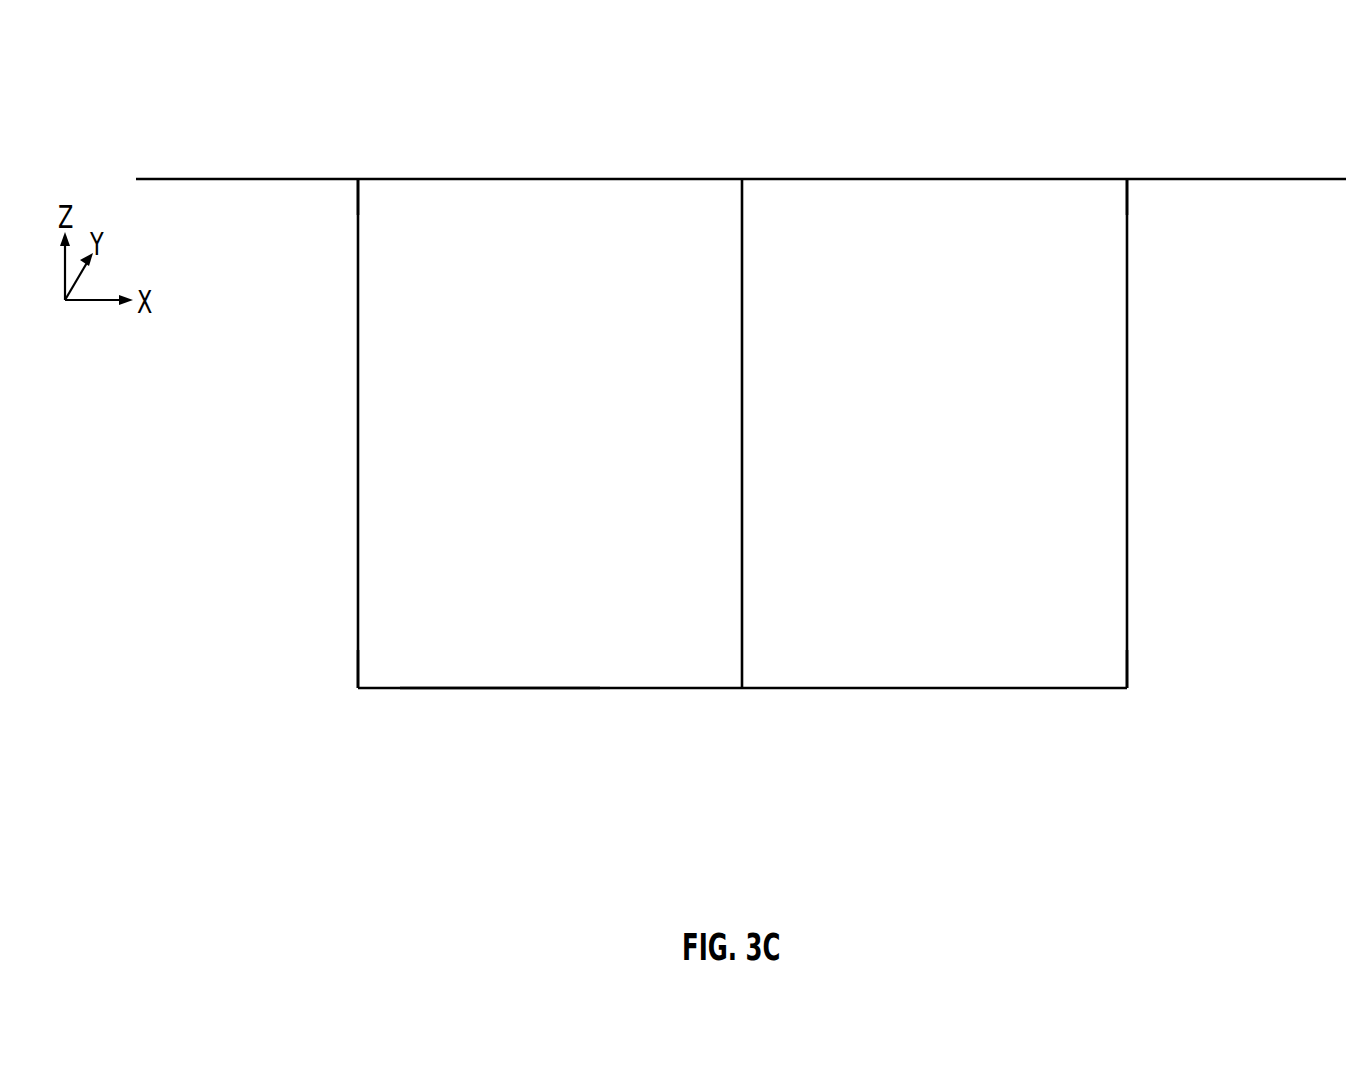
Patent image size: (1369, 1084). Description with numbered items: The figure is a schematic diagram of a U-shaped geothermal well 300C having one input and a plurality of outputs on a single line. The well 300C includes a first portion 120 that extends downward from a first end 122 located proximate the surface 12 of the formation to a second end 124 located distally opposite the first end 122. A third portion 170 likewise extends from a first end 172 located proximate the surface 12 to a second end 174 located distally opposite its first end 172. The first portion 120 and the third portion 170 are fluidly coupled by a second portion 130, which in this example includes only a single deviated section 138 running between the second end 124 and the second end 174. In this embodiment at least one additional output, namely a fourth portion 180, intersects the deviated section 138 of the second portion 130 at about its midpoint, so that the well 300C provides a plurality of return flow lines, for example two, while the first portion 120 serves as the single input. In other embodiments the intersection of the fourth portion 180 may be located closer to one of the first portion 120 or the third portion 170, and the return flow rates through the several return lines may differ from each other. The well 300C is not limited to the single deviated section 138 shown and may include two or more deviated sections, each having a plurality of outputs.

The U-shaped geothermal well 300C is at (542, 74).
The surface 12 is at (900, 179).
The first portion 120 is at (358, 450).
The first end 122 is at (358, 179).
The second end 124 is at (358, 688).
The fourth portion 180 is at (742, 450).
The third portion 170 is at (1127, 449).
The first end 172 is at (1127, 179).
The second end 174 is at (1127, 688).
The deviated section 138 is at (843, 688).
The second portion 130 is at (462, 738).